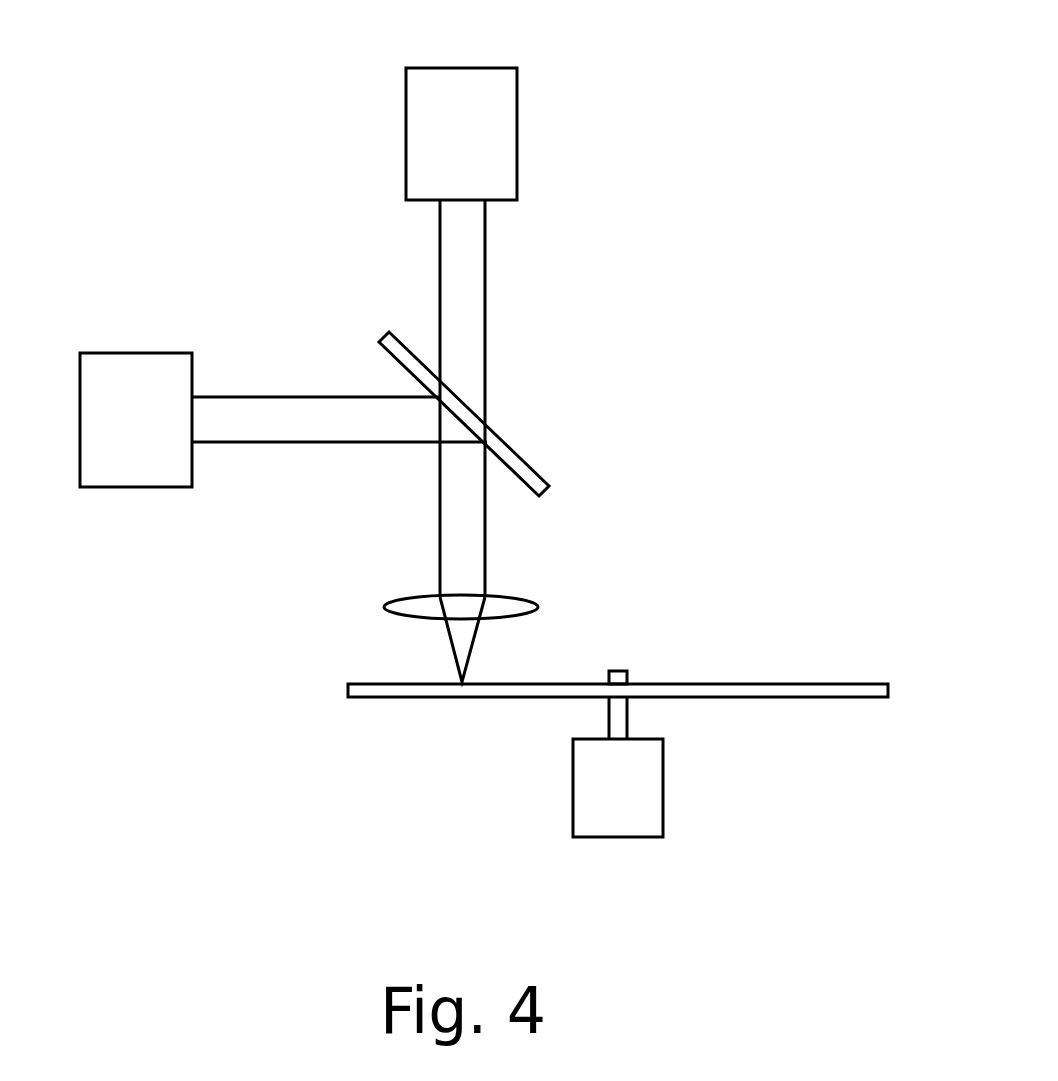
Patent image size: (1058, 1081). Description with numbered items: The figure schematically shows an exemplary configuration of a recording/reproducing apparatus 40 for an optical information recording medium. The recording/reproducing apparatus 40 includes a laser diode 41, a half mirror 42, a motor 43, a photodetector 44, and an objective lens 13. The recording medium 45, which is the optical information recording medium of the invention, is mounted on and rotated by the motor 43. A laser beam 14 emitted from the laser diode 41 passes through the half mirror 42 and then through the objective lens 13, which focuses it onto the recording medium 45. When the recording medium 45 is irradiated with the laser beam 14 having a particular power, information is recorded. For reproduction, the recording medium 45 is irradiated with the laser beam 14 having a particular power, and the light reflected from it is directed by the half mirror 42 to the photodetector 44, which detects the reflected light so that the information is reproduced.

The recording/reproducing apparatus 40 is at (96, 111).
The laser diode 41 is at (517, 133).
The half mirror 42 is at (512, 445).
The motor 43 is at (663, 795).
The photodetector 44 is at (123, 353).
The recording medium 45 is at (776, 684).
The objective lens 13 is at (538, 605).
The laser beam 14 is at (475, 645).